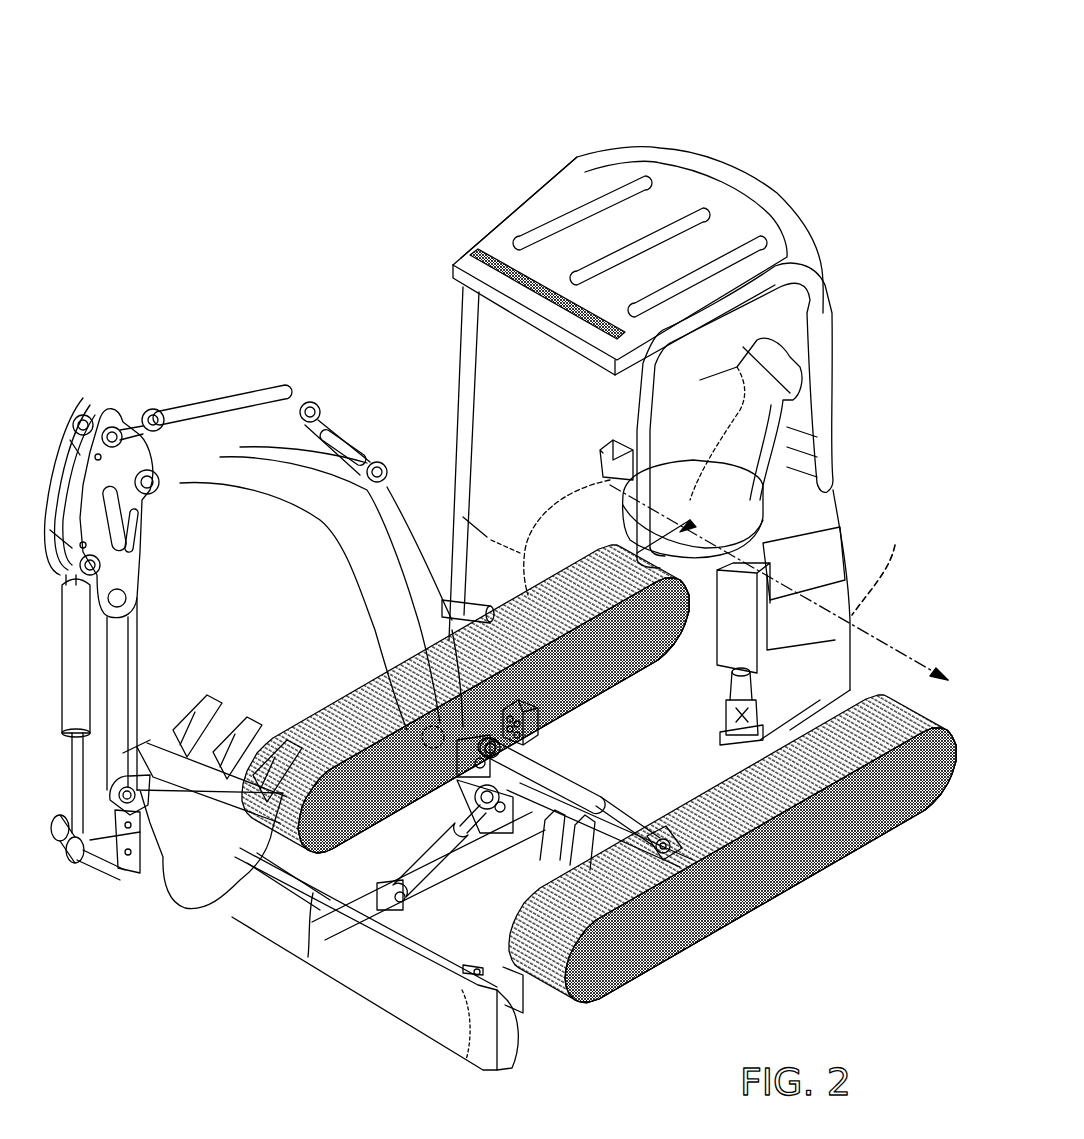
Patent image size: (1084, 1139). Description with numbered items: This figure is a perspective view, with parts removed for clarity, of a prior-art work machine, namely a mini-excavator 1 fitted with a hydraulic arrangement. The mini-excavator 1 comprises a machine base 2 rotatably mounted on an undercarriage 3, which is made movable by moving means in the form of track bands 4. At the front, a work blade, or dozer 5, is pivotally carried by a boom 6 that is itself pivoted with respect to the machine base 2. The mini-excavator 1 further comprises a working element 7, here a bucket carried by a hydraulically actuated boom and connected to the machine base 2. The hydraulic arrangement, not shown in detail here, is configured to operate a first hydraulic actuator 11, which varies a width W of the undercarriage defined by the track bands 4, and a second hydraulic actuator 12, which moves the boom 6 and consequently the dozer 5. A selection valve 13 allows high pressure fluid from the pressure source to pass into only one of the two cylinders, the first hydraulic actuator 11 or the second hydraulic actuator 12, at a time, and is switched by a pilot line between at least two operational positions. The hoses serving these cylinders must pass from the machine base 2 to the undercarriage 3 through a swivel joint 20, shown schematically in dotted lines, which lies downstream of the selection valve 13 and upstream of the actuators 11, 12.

The mini-excavator 1 is at (757, 138).
The machine base 2 is at (838, 515).
The undercarriage 3 is at (863, 664).
The track bands 4 is at (633, 630).
The dozer 5 is at (400, 988).
The boom 6 is at (483, 922).
The working element 7 is at (118, 398).
The first hydraulic actuator 11 is at (583, 797).
The second hydraulic actuator 12 is at (445, 838).
The selection valve 13 is at (543, 728).
The swivel joint 20 is at (727, 712).
The width of undercarriage W is at (879, 565).